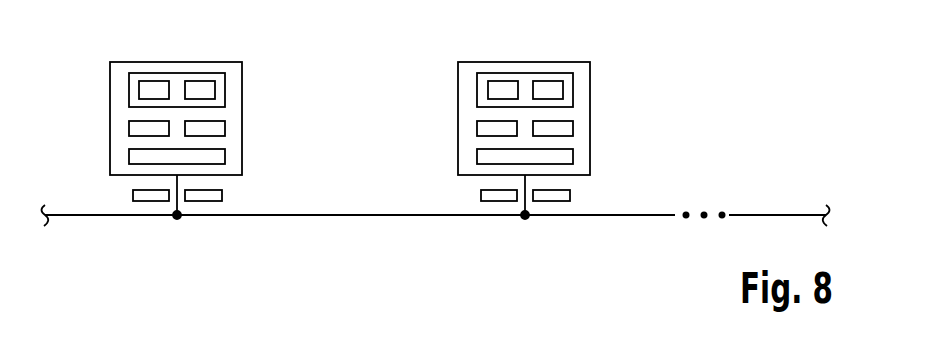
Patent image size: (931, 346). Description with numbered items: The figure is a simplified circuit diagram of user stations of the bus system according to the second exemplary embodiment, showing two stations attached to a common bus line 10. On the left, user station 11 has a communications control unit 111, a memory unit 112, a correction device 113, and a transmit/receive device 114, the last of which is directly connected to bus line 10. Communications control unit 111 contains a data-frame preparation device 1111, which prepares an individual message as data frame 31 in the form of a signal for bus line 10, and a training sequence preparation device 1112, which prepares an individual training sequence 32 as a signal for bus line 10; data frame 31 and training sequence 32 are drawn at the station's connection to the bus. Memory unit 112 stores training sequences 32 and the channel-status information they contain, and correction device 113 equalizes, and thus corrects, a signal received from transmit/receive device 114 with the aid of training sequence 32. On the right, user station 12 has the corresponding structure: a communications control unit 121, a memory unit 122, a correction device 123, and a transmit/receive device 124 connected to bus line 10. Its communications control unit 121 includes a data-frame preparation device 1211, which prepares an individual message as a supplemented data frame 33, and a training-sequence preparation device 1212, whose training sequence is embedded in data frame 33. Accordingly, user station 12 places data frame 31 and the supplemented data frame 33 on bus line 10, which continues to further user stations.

The bus line 10 is at (776, 215).
The user station 11 is at (110, 90).
The communications control unit 111 is at (225, 90).
The data-frame preparation device 1111 is at (155, 81).
The training sequence preparation device 1112 is at (197, 81).
The memory unit 112 is at (129, 128).
The correction device 113 is at (225, 128).
The transmit/receive device 114 is at (225, 156).
The user station 12 is at (458, 90).
The communications control unit 121 is at (573, 90).
The data-frame preparation device 1211 is at (503, 81).
The training-sequence preparation device 1212 is at (546, 81).
The memory unit 122 is at (477, 128).
The correction device 123 is at (573, 128).
The transmit/receive device 124 is at (573, 156).
The data frame 31 is at (133, 196).
The training sequence 32 is at (222, 196).
The supplemented data frame 33 is at (481, 196).